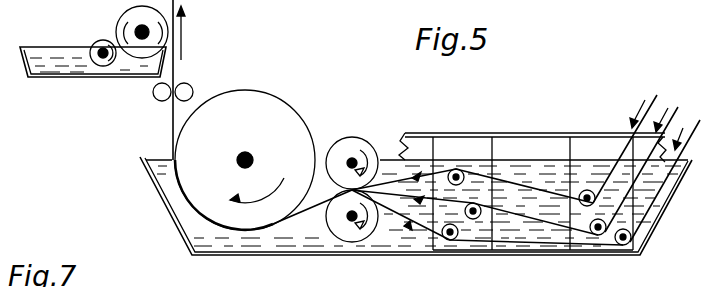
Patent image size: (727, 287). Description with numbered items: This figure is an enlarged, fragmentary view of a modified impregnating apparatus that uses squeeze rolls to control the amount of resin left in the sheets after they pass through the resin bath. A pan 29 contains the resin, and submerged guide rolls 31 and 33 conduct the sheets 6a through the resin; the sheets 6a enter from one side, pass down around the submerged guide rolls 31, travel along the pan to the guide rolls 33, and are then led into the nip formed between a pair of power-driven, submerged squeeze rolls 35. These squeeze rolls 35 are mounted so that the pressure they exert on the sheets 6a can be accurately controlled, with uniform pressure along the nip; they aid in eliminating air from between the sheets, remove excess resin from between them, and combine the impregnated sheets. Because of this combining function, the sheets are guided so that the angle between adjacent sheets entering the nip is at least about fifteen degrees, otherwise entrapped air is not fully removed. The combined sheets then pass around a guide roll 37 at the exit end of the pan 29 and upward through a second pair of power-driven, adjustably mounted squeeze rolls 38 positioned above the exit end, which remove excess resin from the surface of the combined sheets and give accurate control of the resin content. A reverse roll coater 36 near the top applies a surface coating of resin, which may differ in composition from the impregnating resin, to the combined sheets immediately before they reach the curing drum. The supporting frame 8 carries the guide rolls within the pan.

The pan 29 is at (400, 257).
The frame 8 is at (532, 191).
The guide roll 37 is at (298, 106).
The submerged squeeze rolls 35 is at (365, 143).
The sheets 6a is at (520, 270).
The submerged guide rolls 33 is at (486, 192).
The submerged guide rolls 31 is at (650, 238).
The reverse roll coater 36 is at (80, 34).
The squeeze rolls 38 is at (180, 103).